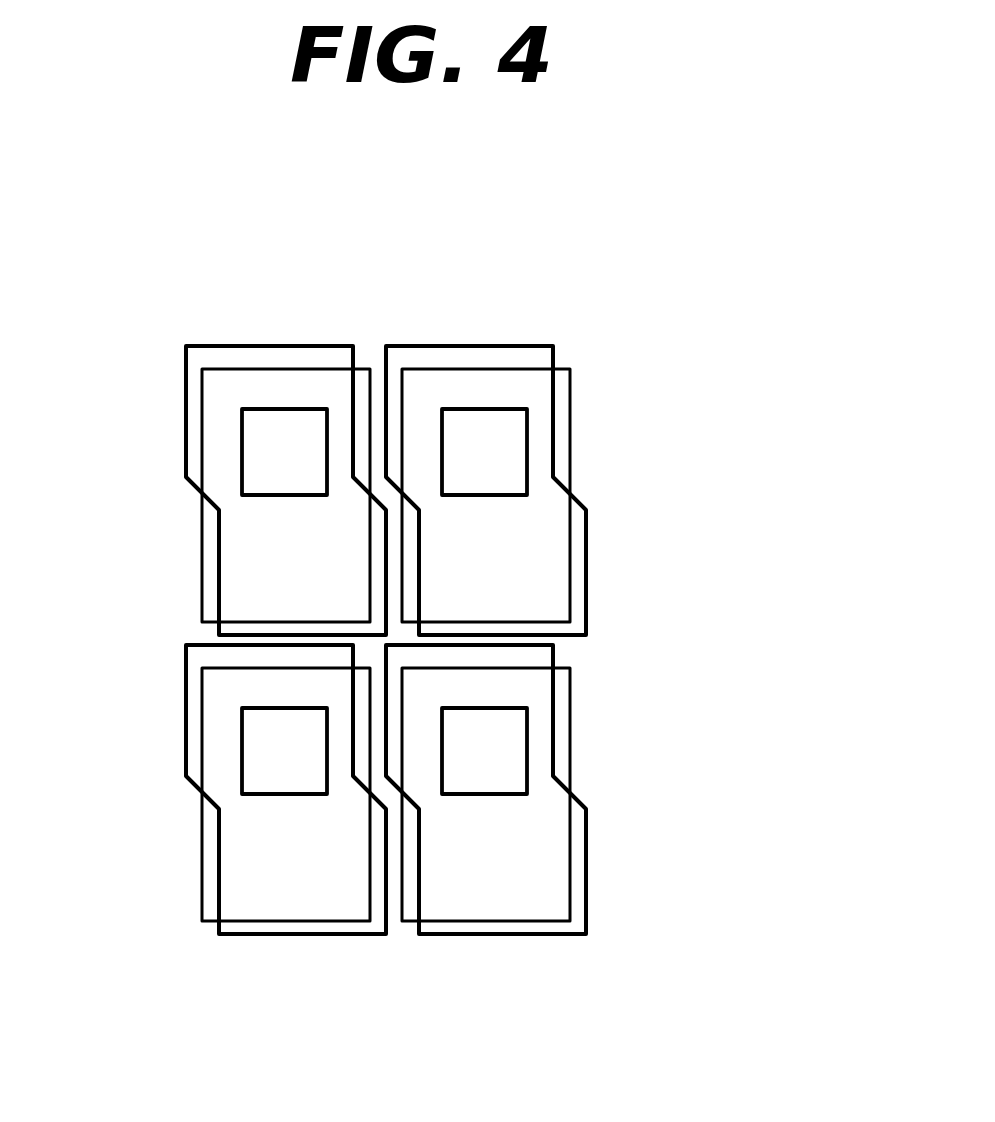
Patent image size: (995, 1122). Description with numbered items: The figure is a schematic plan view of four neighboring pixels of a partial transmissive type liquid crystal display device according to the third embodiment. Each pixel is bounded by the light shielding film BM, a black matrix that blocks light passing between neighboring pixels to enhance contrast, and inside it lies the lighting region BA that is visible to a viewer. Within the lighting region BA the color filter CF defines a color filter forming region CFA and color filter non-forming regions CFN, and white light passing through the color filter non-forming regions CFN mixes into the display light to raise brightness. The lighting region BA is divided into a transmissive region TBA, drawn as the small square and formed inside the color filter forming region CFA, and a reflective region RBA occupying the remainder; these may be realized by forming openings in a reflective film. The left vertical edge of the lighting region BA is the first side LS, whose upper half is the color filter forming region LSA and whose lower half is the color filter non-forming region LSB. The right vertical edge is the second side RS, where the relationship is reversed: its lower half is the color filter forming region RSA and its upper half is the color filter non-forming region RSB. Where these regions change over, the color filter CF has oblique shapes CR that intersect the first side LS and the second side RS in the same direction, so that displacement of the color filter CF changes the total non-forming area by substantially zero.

The light shielding film BM is at (198, 636).
The color filter CF is at (392, 346).
The transmissive region TBA is at (273, 407).
The reflective region RBA is at (256, 534).
The lighting region BA is at (155, 267).
The first side LS is at (553, 230).
The color filter forming region of the first side LSA is at (403, 425).
The color filter non-forming region of the first side LSB is at (403, 552).
The color filter non-forming region CFN is at (563, 397).
The color filter forming region CFA is at (537, 440).
The color filter non-forming region of the second side RSB is at (570, 465).
The oblique shape CR is at (578, 500).
The color filter forming region of the second side RSA is at (570, 545).
The second side RS is at (820, 435).